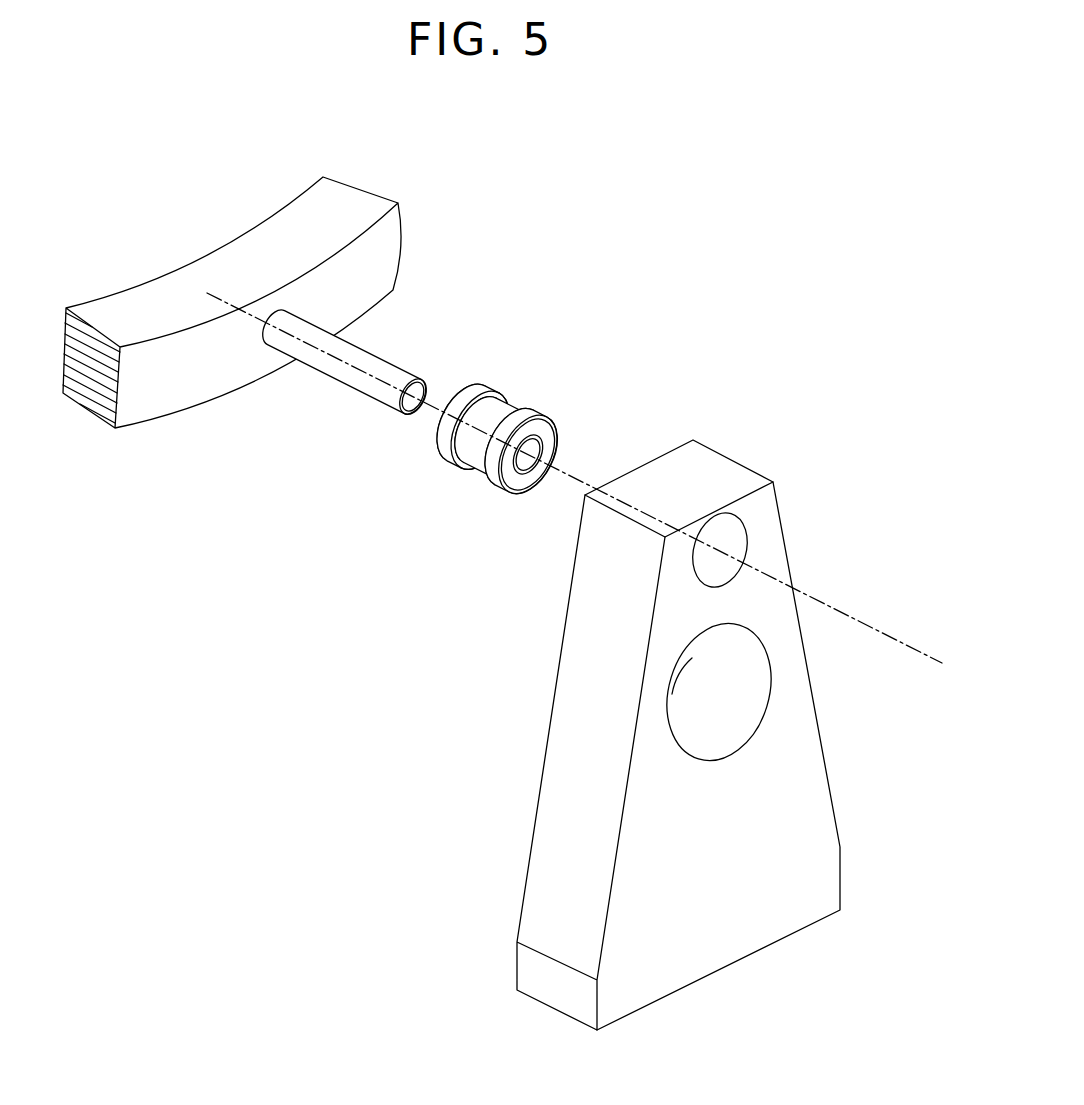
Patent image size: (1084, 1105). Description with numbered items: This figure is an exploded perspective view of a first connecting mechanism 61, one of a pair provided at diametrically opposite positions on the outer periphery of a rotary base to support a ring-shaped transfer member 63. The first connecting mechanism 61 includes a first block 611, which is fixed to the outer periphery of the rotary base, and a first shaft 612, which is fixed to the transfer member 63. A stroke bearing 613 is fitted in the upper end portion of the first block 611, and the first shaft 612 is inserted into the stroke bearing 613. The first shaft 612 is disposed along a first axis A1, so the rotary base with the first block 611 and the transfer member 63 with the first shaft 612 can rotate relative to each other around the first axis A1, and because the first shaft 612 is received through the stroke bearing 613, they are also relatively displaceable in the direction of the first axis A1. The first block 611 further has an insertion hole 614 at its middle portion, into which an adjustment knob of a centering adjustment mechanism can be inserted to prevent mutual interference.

The first connecting mechanism 61 is at (724, 673).
The first block 611 is at (710, 897).
The first shaft 612 is at (385, 372).
The stroke bearing 613 is at (500, 410).
The insertion hole 614 is at (727, 697).
The transfer member 63 is at (298, 243).
The first axis A1 is at (898, 633).